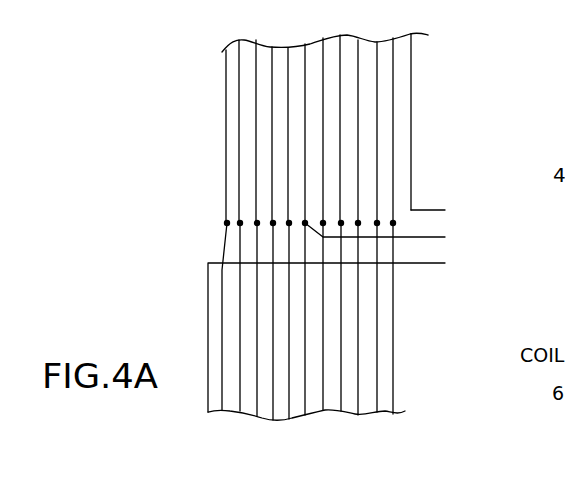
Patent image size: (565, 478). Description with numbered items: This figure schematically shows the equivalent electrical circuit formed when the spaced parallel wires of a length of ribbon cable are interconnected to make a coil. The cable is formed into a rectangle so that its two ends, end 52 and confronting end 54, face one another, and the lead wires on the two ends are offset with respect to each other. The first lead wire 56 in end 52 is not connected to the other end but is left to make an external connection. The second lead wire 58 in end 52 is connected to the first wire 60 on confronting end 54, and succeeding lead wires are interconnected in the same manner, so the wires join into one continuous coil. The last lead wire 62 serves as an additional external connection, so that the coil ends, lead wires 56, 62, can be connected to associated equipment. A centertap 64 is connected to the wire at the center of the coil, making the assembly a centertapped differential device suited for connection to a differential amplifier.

The end 52 is at (239, 40).
The confronting end 54 is at (208, 412).
The first lead wire 56 is at (437, 263).
The second lead wire 58 is at (239, 175).
The first wire 60 is at (240, 247).
The last lead wire 62 is at (423, 210).
The centertap 64 is at (427, 237).